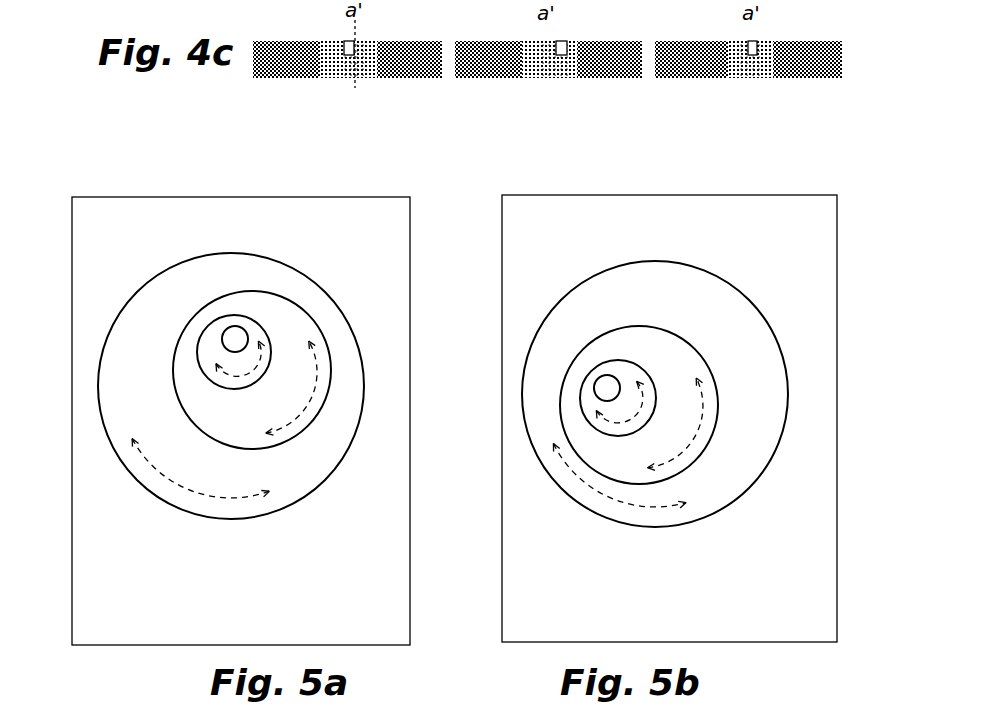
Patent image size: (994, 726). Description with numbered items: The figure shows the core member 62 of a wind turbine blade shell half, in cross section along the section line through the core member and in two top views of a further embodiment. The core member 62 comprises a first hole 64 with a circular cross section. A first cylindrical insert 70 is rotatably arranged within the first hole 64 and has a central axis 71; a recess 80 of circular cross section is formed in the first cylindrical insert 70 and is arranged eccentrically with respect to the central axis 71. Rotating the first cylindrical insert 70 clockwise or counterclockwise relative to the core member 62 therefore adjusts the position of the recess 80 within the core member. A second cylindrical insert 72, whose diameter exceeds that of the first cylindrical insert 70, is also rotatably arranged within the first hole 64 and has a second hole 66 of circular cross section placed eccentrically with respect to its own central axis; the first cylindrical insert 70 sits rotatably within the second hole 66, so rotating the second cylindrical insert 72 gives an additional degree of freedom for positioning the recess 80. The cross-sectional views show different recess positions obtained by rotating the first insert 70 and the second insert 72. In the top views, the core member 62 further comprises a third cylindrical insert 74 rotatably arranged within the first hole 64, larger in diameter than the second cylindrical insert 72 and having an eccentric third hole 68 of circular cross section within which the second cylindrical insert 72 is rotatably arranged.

In FIG. 4C, the core member 62 is at (272, 58).
In FIG. 4C, the first hole 64 is at (377, 60).
In FIG. 5A, the first hole 64 is at (337, 463).
In FIG. 5B, the first hole 64 is at (747, 492).
In FIG. 4C, the second hole 66 is at (337, 65).
In FIG. 5A, the second hole 66 is at (272, 333).
In FIG. 5B, the second hole 66 is at (635, 357).
In FIG. 5A, the third hole 68 is at (178, 338).
In FIG. 5B, the third hole 68 is at (600, 335).
In FIG. 4C, the first cylindrical insert 70 is at (345, 70).
In FIG. 5A, the first cylindrical insert 70 is at (212, 330).
In FIG. 5B, the first cylindrical insert 70 is at (618, 370).
In FIG. 4C, the central axis 71 is at (358, 27).
In FIG. 4C, the second cylindrical insert 72 is at (328, 52).
In FIG. 5A, the second cylindrical insert 72 is at (293, 337).
In FIG. 5B, the second cylindrical insert 72 is at (692, 375).
In FIG. 5A, the third cylindrical insert 74 is at (127, 338).
In FIG. 5B, the third cylindrical insert 74 is at (772, 398).
In FIG. 4C, the recess 80 is at (350, 43).
In FIG. 5A, the recess 80 is at (238, 338).
In FIG. 5B, the recess 80 is at (603, 388).